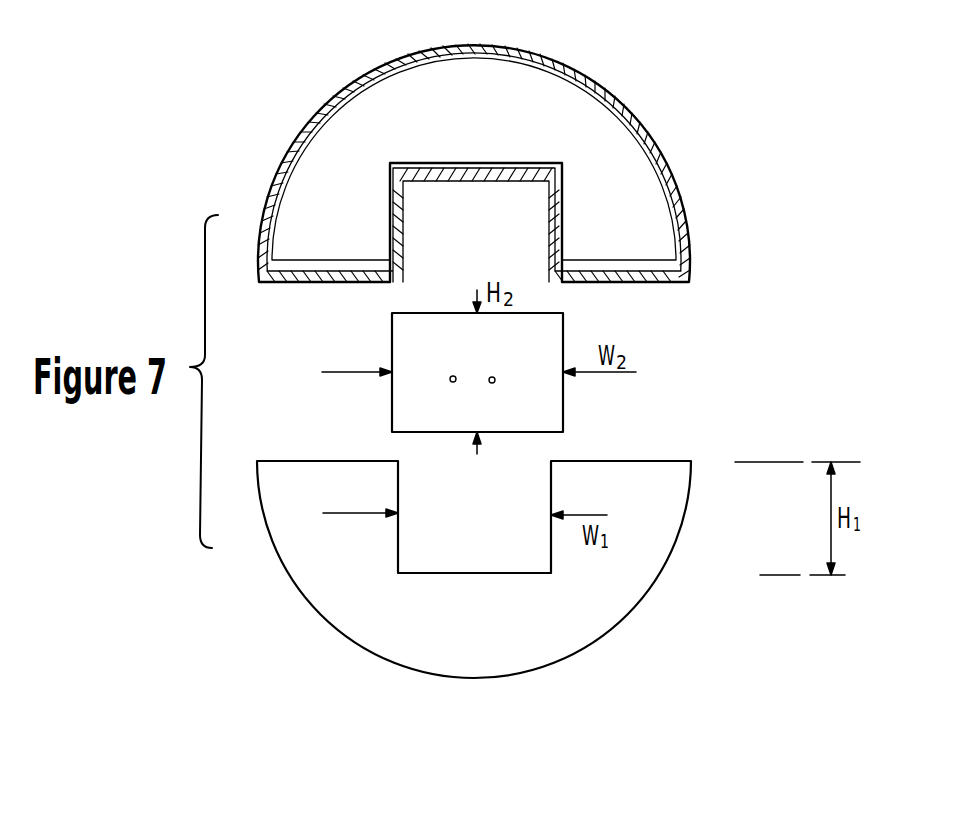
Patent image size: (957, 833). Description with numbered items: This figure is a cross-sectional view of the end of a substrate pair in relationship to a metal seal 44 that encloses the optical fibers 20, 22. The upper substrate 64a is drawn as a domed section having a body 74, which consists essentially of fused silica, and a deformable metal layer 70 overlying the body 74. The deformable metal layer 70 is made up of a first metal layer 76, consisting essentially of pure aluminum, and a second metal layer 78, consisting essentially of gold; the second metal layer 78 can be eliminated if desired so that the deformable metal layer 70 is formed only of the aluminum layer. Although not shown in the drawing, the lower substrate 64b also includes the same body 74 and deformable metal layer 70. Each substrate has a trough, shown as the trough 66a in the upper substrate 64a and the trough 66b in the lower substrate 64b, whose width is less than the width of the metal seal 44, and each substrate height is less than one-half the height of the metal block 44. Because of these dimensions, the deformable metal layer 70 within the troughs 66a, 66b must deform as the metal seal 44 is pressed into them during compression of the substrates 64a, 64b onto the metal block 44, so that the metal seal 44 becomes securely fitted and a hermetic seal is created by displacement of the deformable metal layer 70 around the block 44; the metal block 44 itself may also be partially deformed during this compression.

The deformable metal layer 70 is at (716, 233).
The upper substrate 64a is at (660, 96).
The lower substrate 64b is at (560, 652).
The trough of the upper substrate 66a is at (495, 232).
The trough of the lower substrate 66b is at (436, 478).
The body 74 is at (476, 92).
The first metal layer 76 is at (300, 147).
The second metal layer 78 is at (278, 172).
The metal seal 44 is at (551, 400).
The optical fiber 20 is at (490, 376).
The optical fiber 22 is at (451, 377).